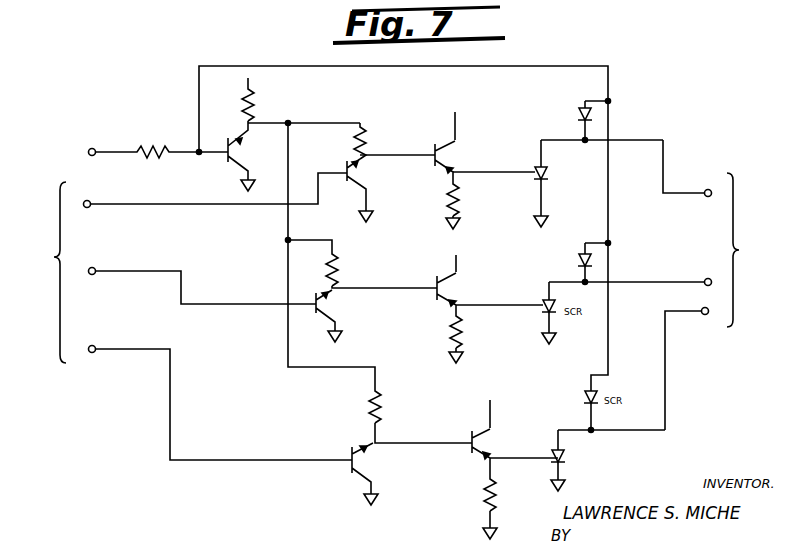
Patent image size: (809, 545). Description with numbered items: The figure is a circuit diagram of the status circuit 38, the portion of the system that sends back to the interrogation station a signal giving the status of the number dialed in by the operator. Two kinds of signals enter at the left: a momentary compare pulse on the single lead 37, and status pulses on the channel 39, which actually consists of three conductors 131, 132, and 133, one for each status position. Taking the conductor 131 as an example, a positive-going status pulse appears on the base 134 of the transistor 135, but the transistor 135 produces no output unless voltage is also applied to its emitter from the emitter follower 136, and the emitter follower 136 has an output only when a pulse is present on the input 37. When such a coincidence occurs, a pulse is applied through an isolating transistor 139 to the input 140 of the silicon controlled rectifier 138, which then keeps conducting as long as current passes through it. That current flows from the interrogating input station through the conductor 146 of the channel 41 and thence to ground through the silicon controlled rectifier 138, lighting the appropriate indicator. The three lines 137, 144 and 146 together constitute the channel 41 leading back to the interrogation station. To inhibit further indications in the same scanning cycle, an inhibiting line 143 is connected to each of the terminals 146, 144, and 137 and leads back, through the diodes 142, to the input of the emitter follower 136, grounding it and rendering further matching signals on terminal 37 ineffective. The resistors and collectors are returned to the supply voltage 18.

The supply voltage 18 is at (373, 252).
The output terminal 37 is at (111, 147).
The status circuit 38 is at (656, 112).
The channel 39 is at (54, 257).
The channel 41 is at (739, 250).
The conductor 131 is at (145, 204).
The conductor 132 is at (145, 271).
The conductor 133 is at (149, 350).
The base 134 is at (346, 168).
The transistor 135 is at (366, 148).
The emitter follower 136 is at (232, 137).
The line 137 is at (677, 316).
The silicon controlled rectifier 138 is at (548, 165).
The isolating transistor 139 is at (450, 157).
The input 140 is at (532, 169).
The diodes 142 is at (578, 118).
The inhibiting line 143 is at (527, 68).
The line 144 is at (665, 279).
The conductor 146 is at (688, 193).